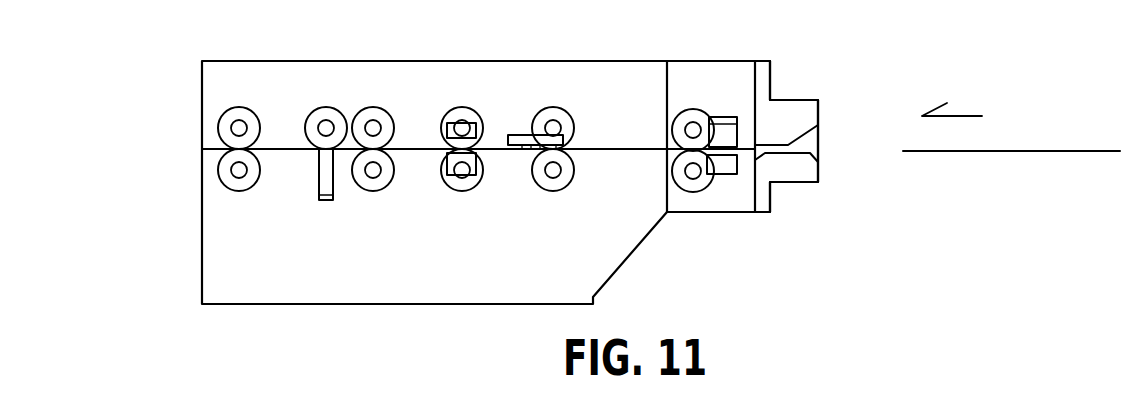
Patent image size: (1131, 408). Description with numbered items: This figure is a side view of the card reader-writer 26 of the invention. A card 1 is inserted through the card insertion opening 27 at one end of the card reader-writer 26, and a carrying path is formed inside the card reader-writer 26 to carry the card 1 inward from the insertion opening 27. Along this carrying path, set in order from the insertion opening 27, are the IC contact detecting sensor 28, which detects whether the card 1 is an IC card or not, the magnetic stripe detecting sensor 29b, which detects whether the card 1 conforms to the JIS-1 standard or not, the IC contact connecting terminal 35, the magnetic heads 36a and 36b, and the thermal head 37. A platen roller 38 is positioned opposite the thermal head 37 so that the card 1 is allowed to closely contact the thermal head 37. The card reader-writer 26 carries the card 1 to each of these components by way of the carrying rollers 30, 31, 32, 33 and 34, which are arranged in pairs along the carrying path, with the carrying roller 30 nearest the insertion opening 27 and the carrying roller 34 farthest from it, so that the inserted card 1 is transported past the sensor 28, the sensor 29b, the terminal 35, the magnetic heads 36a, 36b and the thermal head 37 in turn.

The card 1 is at (805, 201).
The card reader-writer 26 is at (800, 100).
The card insertion opening 27 is at (812, 140).
The IC contact detecting sensor 28 is at (720, 117).
The magnetic stripe detecting sensor 29b is at (738, 143).
The carrying roller 30 is at (693, 192).
The carrying roller 31 is at (560, 187).
The carrying roller 32 is at (472, 188).
The carrying roller 33 is at (380, 184).
The carrying roller 34 is at (248, 192).
The IC contact connecting terminal 35 is at (518, 135).
The magnetic head 36a is at (447, 124).
The magnetic head 36b is at (478, 170).
The thermal head 37 is at (326, 202).
The platen roller 38 is at (316, 112).